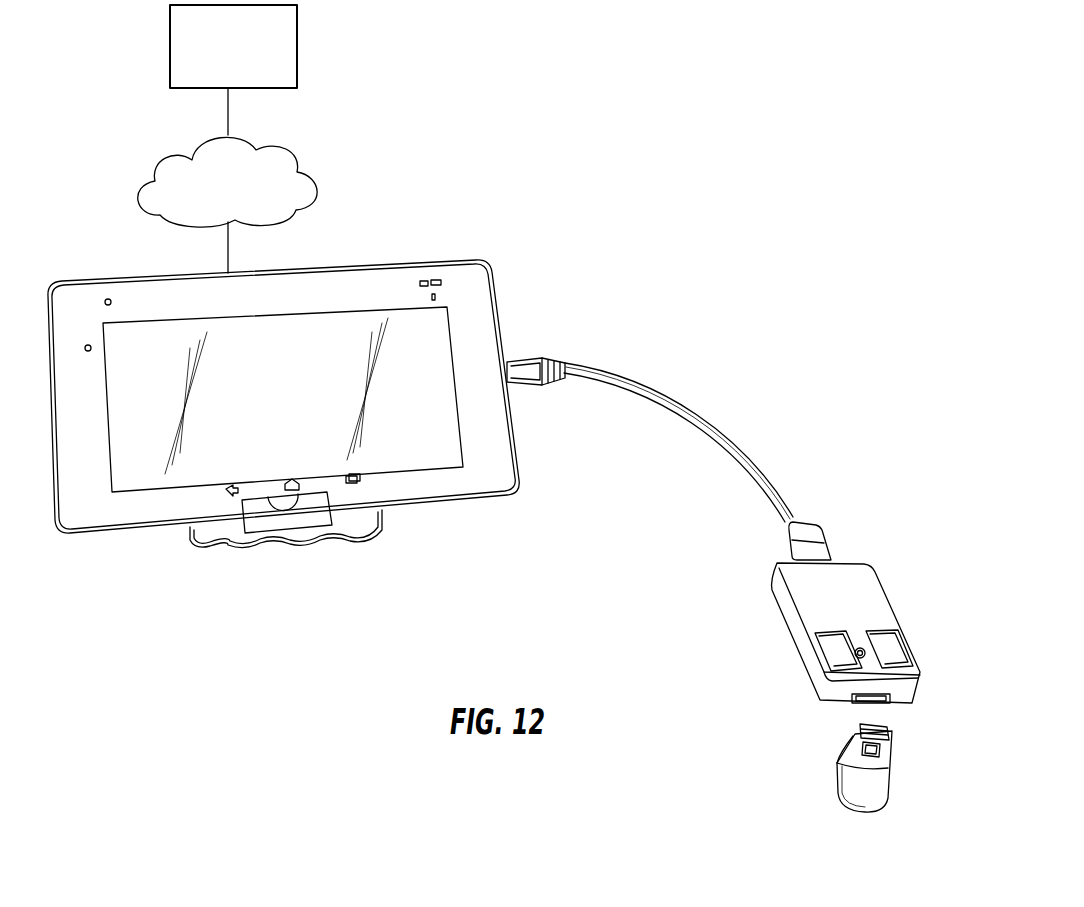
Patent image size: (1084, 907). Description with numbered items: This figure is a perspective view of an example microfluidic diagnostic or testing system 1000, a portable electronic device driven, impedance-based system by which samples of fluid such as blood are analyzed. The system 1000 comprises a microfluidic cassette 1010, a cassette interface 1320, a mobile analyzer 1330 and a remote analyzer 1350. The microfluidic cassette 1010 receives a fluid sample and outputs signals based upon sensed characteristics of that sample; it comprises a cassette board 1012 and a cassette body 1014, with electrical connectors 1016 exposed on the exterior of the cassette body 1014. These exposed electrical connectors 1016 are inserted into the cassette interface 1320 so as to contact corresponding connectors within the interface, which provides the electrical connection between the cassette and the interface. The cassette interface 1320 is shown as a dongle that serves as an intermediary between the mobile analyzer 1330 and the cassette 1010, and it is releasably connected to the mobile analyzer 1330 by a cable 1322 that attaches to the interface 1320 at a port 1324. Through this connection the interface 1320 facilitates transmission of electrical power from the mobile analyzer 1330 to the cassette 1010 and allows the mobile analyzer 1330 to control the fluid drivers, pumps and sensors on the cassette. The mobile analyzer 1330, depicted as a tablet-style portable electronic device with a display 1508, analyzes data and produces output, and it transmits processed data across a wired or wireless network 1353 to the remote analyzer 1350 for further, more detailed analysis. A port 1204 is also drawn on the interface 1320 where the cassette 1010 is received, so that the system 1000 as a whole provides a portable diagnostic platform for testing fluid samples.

The microfluidic diagnostic or testing system 1000 is at (781, 272).
The remote analyzer 1350 is at (297, 43).
The network 1353 is at (320, 205).
The mobile analyzer 1330 is at (500, 308).
The display screen 1508 is at (417, 442).
The port 1324 is at (512, 372).
The cable 1322 is at (720, 420).
The cassette interface 1320 is at (888, 610).
The port 1204 is at (877, 697).
The microfluidic cassette 1010 is at (890, 780).
The cassette board 1012 is at (860, 725).
The electrical connectors 1016 is at (886, 724).
The cassette body 1014 is at (837, 770).